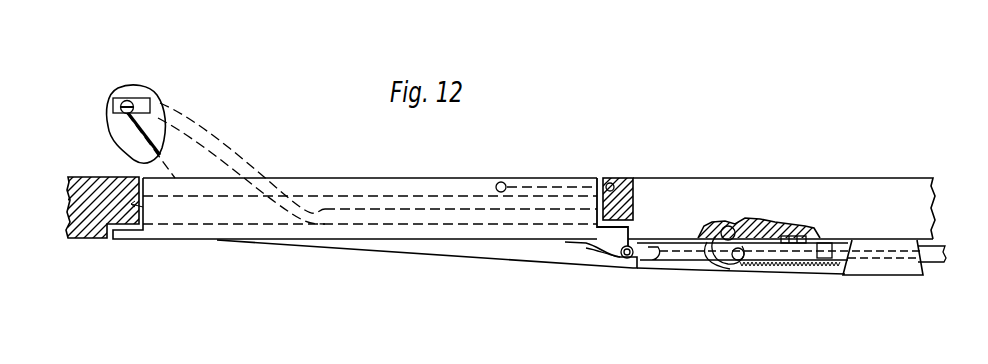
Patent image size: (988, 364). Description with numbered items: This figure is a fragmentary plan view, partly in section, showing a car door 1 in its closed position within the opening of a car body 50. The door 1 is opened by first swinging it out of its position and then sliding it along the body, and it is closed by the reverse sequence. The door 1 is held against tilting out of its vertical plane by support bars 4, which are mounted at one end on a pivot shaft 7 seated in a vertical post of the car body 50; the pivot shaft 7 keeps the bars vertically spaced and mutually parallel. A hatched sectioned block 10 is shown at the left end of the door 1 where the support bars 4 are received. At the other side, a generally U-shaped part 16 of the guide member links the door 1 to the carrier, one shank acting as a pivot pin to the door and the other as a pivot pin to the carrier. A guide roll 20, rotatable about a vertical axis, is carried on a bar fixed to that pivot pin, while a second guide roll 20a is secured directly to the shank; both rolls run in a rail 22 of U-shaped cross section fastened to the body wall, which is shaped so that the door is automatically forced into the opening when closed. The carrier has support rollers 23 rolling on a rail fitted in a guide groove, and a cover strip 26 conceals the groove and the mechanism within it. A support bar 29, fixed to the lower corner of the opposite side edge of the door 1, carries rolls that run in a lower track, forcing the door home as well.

The door 1 is at (163, 231).
The support bar 4 is at (553, 178).
The pivot shaft 7 is at (616, 178).
The mounting block 10 is at (83, 236).
The U-shaped part 16 is at (670, 253).
The guide roll 20 is at (729, 226).
The second guide roll 20a is at (739, 260).
The rail 22 is at (935, 250).
The support rollers 23 is at (797, 233).
The cover strip 26 is at (863, 274).
The support bar 29 is at (142, 148).
The car body 50 is at (872, 185).